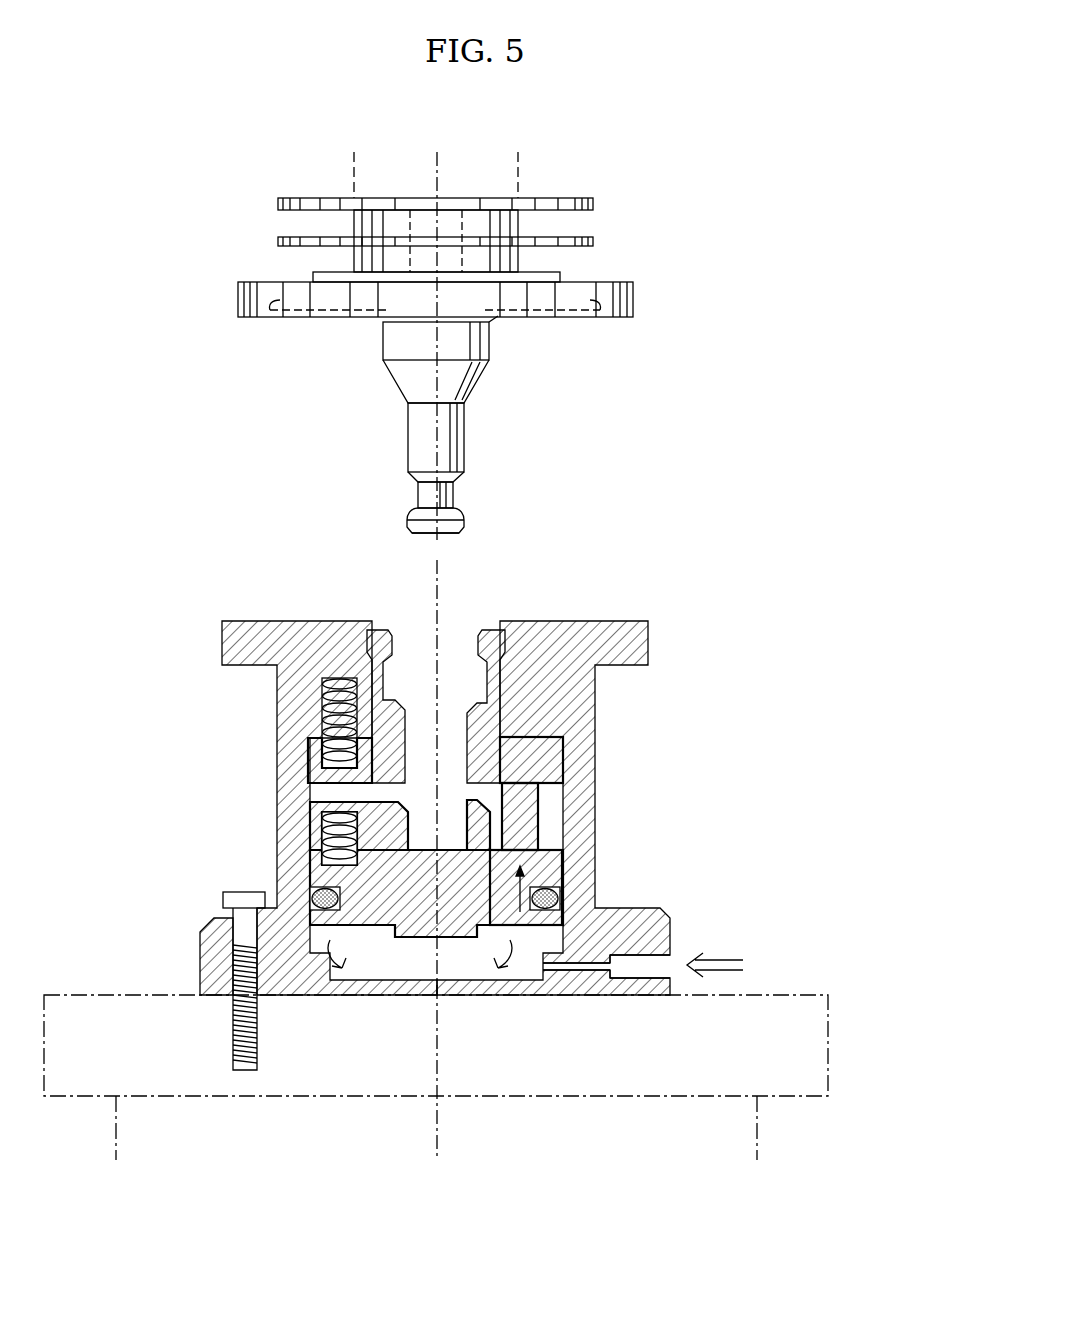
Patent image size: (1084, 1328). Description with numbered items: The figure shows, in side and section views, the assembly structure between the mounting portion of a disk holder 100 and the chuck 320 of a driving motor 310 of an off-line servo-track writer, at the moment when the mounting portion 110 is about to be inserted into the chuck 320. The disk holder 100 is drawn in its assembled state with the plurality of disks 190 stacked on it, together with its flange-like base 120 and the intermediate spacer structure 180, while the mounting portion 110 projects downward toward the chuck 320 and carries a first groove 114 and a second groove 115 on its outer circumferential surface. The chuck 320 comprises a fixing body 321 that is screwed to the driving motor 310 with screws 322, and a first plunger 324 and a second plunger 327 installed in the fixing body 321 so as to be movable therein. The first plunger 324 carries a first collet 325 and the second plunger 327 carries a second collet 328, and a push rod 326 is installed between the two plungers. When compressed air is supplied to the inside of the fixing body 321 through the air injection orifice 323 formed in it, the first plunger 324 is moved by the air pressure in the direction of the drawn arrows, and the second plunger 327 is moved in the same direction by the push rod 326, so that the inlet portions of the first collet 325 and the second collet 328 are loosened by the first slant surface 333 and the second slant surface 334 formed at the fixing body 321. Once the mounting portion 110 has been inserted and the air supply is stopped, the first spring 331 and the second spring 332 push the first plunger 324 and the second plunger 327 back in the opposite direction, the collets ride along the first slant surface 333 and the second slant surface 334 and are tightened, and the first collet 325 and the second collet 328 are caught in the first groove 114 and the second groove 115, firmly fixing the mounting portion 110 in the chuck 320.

The disk holder 100 is at (290, 404).
The mounting portion 110 is at (383, 340).
The first groove 114 is at (456, 494).
The second groove 115 is at (490, 318).
The holder base plate 120 is at (636, 297).
The spacer hub 180 is at (352, 256).
The disks 190 is at (592, 242).
The driving motor 310 is at (112, 995).
The chuck 320 is at (612, 834).
The fixing body 321 is at (285, 782).
The screws 322 is at (225, 897).
The air injection orifice 323 is at (655, 965).
The first plunger 324 is at (563, 872).
The first collet 325 is at (460, 800).
The push rod 326 is at (520, 808).
The second plunger 327 is at (555, 757).
The second collet 328 is at (488, 628).
The first spring 331 is at (335, 838).
The second spring 332 is at (335, 716).
The first slant surface 333 is at (490, 800).
The second slant surface 334 is at (372, 628).